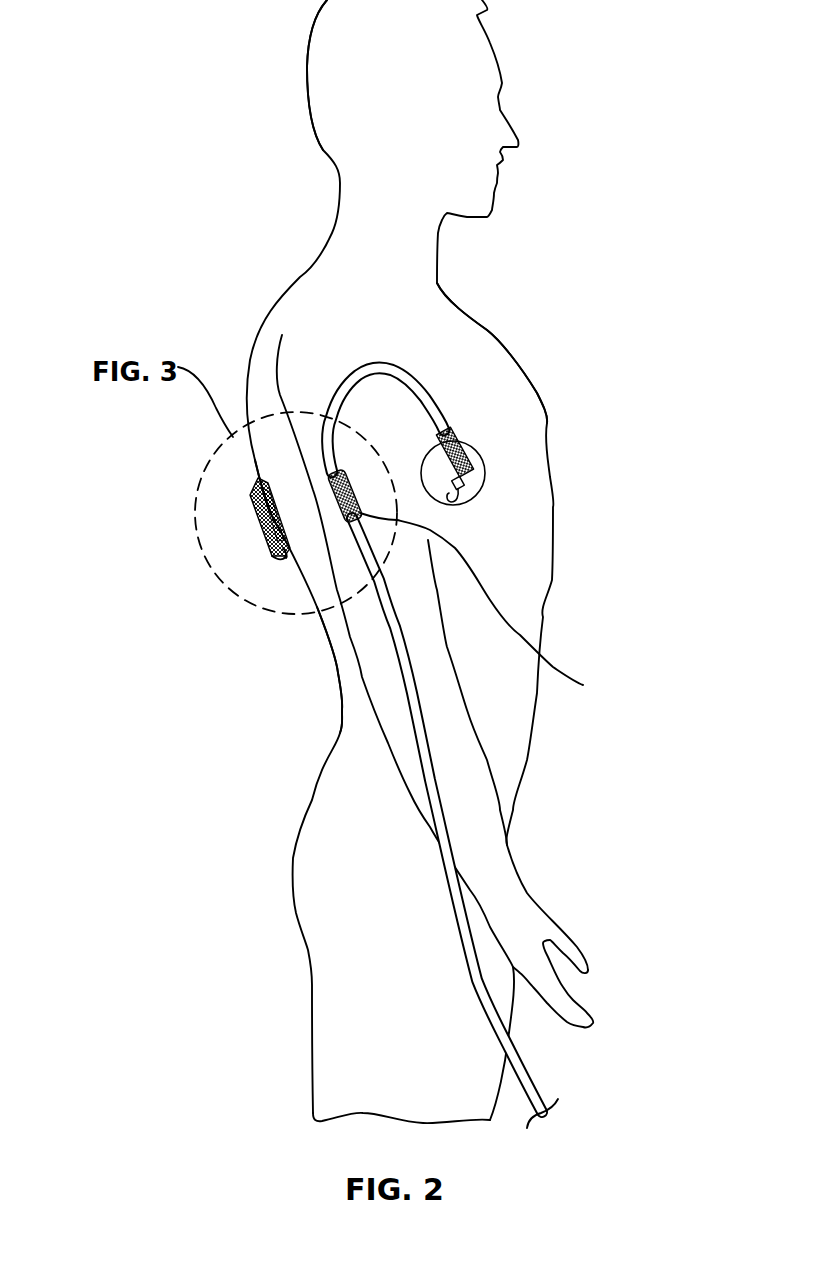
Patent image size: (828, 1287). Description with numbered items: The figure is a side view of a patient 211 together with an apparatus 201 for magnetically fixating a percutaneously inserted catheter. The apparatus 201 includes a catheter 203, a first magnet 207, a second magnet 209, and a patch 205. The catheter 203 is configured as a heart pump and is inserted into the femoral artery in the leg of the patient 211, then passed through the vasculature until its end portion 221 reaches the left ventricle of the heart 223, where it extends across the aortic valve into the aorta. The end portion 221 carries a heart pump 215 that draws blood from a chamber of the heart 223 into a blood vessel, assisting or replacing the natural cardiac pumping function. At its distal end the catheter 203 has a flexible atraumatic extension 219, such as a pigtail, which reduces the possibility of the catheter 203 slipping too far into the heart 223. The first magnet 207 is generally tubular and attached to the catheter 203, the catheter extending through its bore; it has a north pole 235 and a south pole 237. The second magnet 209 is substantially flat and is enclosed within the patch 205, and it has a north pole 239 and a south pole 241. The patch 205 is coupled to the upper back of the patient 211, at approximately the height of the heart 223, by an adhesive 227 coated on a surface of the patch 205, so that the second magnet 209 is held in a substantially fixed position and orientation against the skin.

The apparatus 201 is at (226, 305).
The catheter 203 is at (460, 938).
The patch 205 is at (252, 510).
The first magnet 207 is at (358, 485).
The second magnet 209 is at (258, 525).
The patient 211 is at (338, 673).
The heart pump 215 is at (467, 457).
The flexible atraumatic extension 219 is at (463, 507).
The end portion 221 is at (463, 443).
The heart 223 is at (487, 480).
The adhesive 227 is at (255, 483).
The north pole 235 is at (350, 482).
The south pole 237 is at (500, 609).
The north pole 239 is at (268, 540).
The south pole 241 is at (252, 502).